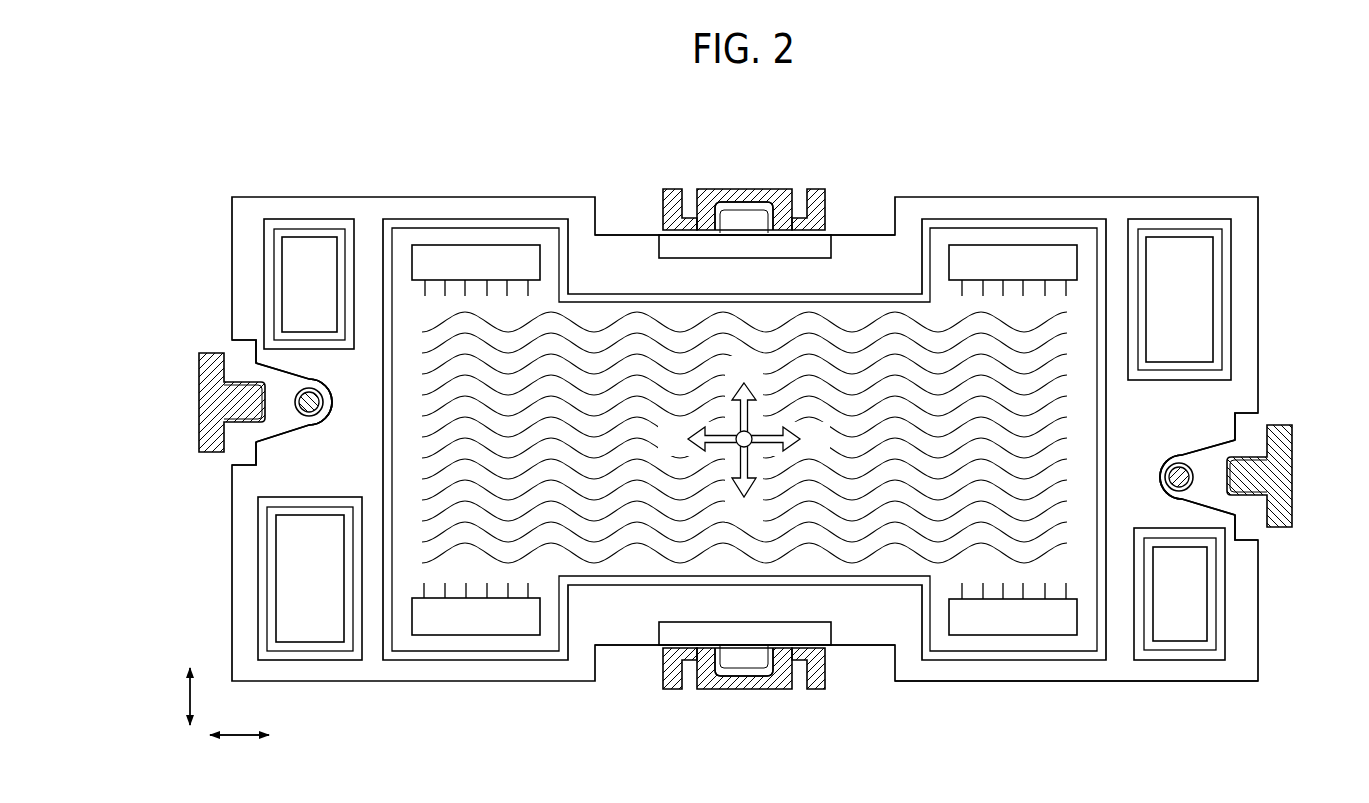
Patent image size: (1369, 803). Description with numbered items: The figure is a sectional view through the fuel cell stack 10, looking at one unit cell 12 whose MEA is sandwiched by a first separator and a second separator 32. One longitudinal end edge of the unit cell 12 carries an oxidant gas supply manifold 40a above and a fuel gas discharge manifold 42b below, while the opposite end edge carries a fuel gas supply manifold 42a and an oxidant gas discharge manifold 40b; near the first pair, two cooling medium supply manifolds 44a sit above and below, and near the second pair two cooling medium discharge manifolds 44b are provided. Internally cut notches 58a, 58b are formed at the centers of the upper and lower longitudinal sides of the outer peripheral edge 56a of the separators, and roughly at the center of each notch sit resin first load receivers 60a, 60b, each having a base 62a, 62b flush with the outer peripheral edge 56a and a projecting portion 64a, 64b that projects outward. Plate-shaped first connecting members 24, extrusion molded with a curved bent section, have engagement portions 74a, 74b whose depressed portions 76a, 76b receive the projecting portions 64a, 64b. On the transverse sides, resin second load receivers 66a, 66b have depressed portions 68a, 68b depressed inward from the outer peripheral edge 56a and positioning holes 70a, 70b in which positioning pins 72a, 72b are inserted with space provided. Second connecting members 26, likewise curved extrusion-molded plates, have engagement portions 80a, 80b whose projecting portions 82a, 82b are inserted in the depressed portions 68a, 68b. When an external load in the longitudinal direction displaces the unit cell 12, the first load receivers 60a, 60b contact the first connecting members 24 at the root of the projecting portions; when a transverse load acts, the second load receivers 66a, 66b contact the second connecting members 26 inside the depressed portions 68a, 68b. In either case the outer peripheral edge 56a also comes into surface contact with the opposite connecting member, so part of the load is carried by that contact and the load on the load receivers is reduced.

The fuel cell stack 10 is at (1109, 125).
The unit cell 12 is at (742, 444).
The first connecting member 24 is at (669, 186).
The second connecting member 26 is at (749, 440).
The second separator 32 is at (1127, 679).
The oxidant gas supply manifold 40a is at (1182, 253).
The oxidant gas discharge manifold 40b is at (309, 636).
The fuel gas supply manifold 42a is at (312, 247).
The fuel gas discharge manifold 42b is at (1178, 628).
The cooling medium supply manifold 44a is at (983, 257).
The cooling medium discharge manifold 44b is at (477, 252).
The outer peripheral edge 56a is at (553, 196).
The notch 58a is at (628, 215).
The notch 58b is at (880, 676).
The first load receiver 60a is at (706, 212).
The first load receiver 60b is at (783, 671).
The base 62a is at (793, 253).
The base 62b is at (697, 628).
The projecting portion 64a is at (737, 220).
The projecting portion 64b is at (750, 657).
The second load receiver 66a is at (1187, 450).
The second load receiver 66b is at (309, 433).
The depressed portion 68a is at (1284, 474).
The depressed portion 68b is at (211, 408).
The positioning hole 70a is at (1171, 460).
The positioning hole 70b is at (318, 419).
The positioning pin 72a is at (1180, 466).
The positioning pin 72b is at (309, 413).
The engagement portion 74a is at (776, 193).
The engagement portion 74b is at (705, 690).
The depressed portion 76a is at (712, 197).
The depressed portion 76b is at (775, 677).
The engagement portion 80a is at (1269, 485).
The engagement portion 80b is at (212, 392).
The projecting portion 82a is at (1229, 483).
The projecting portion 82b is at (251, 398).